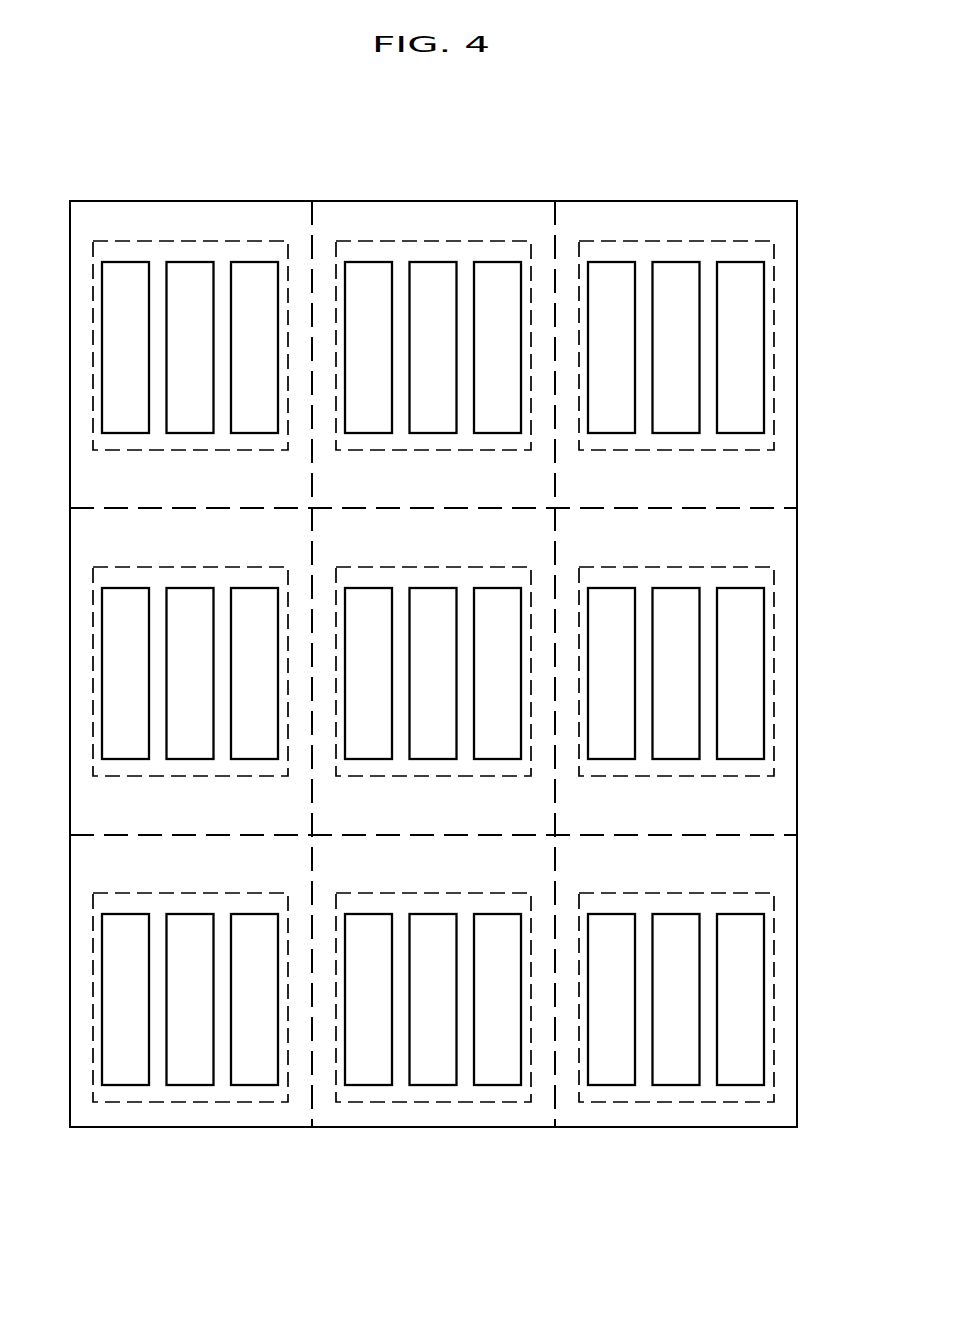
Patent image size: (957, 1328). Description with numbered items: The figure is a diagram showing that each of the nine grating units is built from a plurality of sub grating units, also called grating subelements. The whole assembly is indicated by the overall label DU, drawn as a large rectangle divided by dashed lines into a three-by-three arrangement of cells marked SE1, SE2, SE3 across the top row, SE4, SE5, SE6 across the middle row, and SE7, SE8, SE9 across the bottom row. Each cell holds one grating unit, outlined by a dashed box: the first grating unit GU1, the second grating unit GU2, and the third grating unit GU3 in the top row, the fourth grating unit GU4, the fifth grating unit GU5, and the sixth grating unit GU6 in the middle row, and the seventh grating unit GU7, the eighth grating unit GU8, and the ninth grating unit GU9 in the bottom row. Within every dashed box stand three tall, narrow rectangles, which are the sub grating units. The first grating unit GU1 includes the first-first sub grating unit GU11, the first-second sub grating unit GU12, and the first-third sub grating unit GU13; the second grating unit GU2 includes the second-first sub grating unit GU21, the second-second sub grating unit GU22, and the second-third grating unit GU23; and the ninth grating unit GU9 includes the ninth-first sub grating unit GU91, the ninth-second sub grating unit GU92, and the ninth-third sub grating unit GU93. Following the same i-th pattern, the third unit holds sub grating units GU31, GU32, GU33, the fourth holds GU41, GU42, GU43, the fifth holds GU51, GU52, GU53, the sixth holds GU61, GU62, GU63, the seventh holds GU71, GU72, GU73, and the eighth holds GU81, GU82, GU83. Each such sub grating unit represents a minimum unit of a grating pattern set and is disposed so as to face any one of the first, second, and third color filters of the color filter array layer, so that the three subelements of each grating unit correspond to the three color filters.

The display unit DU is at (802, 172).
The first sensing area SE1 is at (248, 233).
The second sensing area SE2 is at (491, 233).
The third sensing area SE3 is at (734, 233).
The fourth sensing area SE4 is at (248, 559).
The fifth sensing area SE5 is at (491, 559).
The sixth sensing area SE6 is at (734, 559).
The seventh sensing area SE7 is at (248, 885).
The eighth sensing area SE8 is at (491, 885).
The ninth sensing area SE9 is at (734, 885).
The first grating unit GU1 is at (191, 240).
The second grating unit GU2 is at (434, 240).
The third grating unit GU3 is at (677, 240).
The fourth grating unit GU4 is at (191, 566).
The fifth grating unit GU5 is at (434, 566).
The sixth grating unit GU6 is at (677, 566).
The seventh grating unit GU7 is at (191, 892).
The eighth grating unit GU8 is at (434, 892).
The ninth grating unit GU9 is at (677, 892).
The first-first sub grating unit GU11 is at (125, 433).
The first-second sub grating unit GU12 is at (190, 433).
The first-third sub grating unit GU13 is at (254, 433).
The second-first sub grating unit GU21 is at (368, 433).
The second-second sub grating unit GU22 is at (433, 433).
The second-third grating unit GU23 is at (497, 433).
The third-first sub grating unit GU31 is at (611, 433).
The third-second sub grating unit GU32 is at (676, 433).
The third-third sub grating unit GU33 is at (740, 433).
The fourth-first sub grating unit GU41 is at (125, 759).
The fourth-second sub grating unit GU42 is at (190, 759).
The fourth-third sub grating unit GU43 is at (254, 759).
The fifth-first sub grating unit GU51 is at (368, 759).
The fifth-second sub grating unit GU52 is at (433, 759).
The fifth-third sub grating unit GU53 is at (497, 759).
The sixth-first sub grating unit GU61 is at (611, 759).
The sixth-second sub grating unit GU62 is at (676, 759).
The sixth-third sub grating unit GU63 is at (740, 759).
The seventh-first sub grating unit GU71 is at (125, 1085).
The seventh-second sub grating unit GU72 is at (190, 1085).
The seventh-third sub grating unit GU73 is at (254, 1085).
The eighth-first sub grating unit GU81 is at (368, 1085).
The eighth-second sub grating unit GU82 is at (433, 1085).
The eighth-third sub grating unit GU83 is at (497, 1085).
The ninth-first sub grating unit GU91 is at (611, 1085).
The ninth-second sub grating unit GU92 is at (676, 1085).
The ninth-third sub grating unit GU93 is at (740, 1085).